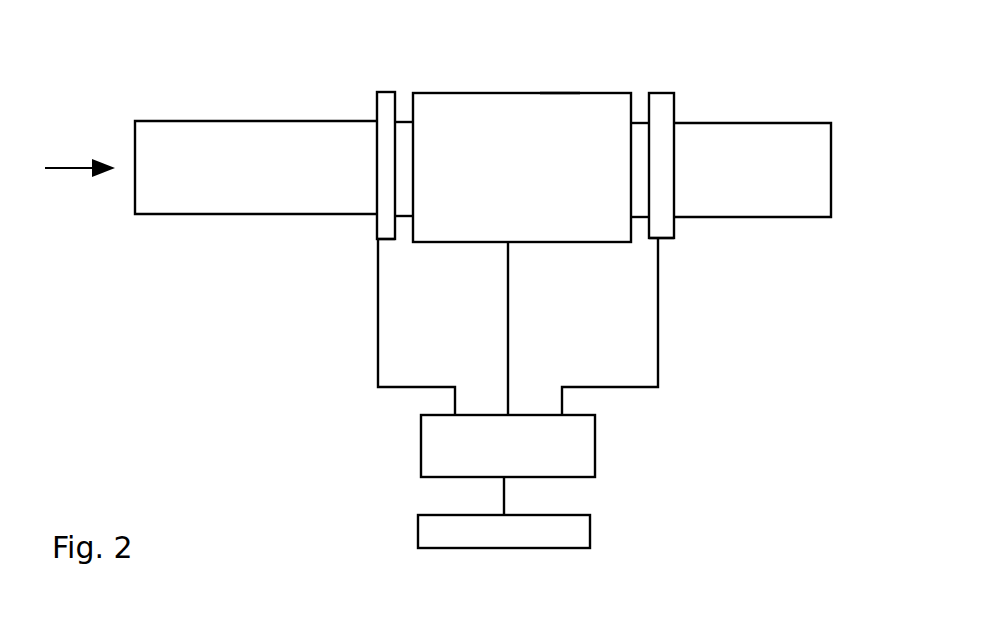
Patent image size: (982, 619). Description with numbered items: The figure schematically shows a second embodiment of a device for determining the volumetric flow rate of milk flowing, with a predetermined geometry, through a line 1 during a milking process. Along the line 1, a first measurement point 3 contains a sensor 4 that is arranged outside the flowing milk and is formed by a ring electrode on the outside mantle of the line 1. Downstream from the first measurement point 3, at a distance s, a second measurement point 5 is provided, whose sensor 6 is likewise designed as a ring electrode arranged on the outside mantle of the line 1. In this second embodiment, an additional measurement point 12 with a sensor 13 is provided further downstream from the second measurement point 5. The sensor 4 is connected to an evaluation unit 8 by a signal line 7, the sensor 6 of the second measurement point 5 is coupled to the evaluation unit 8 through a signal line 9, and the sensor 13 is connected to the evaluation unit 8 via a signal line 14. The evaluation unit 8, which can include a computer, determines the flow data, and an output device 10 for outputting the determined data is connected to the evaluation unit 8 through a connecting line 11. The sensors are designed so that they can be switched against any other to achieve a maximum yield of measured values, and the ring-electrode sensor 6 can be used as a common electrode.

The line 1 is at (818, 137).
The first measurement point 3 is at (366, 89).
The sensor 4 is at (376, 229).
The second measurement point 5 is at (478, 67).
The sensor 6 is at (559, 103).
The signal line 7 is at (377, 317).
The evaluation unit 8 is at (435, 447).
The signal line 9 is at (507, 308).
The output device 10 is at (435, 537).
The connecting line 11 is at (498, 495).
The additional measurement point 12 is at (684, 73).
The sensor 13 is at (664, 237).
The signal line 14 is at (651, 300).